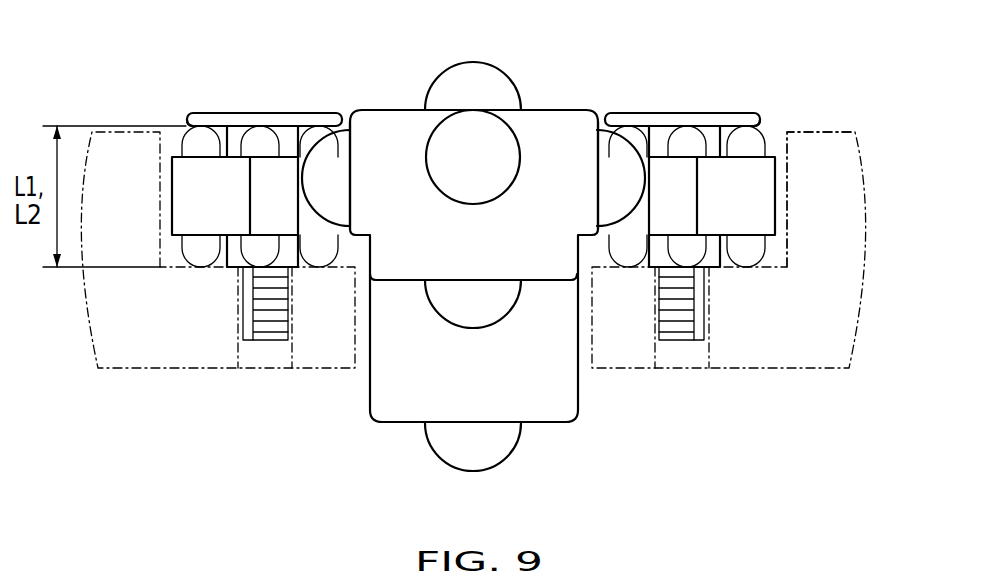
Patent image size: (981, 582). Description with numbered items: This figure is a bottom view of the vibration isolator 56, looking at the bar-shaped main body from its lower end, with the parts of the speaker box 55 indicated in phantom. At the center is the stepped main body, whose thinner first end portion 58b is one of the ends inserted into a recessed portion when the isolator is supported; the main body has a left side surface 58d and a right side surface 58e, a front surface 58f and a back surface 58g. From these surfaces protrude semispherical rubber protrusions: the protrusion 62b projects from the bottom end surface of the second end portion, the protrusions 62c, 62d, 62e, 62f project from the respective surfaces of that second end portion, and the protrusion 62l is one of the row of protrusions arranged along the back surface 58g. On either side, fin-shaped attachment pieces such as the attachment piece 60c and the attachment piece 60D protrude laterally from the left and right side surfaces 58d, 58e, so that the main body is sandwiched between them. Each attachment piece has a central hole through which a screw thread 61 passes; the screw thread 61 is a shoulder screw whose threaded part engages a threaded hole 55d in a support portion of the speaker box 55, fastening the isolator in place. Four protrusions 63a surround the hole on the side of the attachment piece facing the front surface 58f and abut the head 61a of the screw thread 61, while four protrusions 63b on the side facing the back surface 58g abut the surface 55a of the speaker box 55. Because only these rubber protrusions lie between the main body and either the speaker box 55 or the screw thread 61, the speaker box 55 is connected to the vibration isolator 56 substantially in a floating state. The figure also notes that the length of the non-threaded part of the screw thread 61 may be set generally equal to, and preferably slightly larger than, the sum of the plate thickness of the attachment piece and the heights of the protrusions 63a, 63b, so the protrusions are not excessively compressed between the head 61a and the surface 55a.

The speaker box 55 is at (798, 380).
The surface of the speaker box 55a is at (787, 252).
The threaded hole 55d is at (251, 362).
The vibration isolator 56 is at (111, 31).
The first end portion 58b is at (509, 105).
The left side surface 58d is at (341, 163).
The right side surface 58e is at (620, 130).
The front surface 58f is at (380, 110).
The back surface 58g is at (400, 282).
The attachment piece 60c is at (197, 168).
The attachment piece 60D is at (757, 185).
The screw thread 61 is at (188, 106).
The head 61a is at (192, 118).
The protrusion 62b is at (508, 148).
The protrusion 62c is at (313, 140).
The protrusion 62d is at (620, 150).
The protrusion 62e is at (472, 72).
The protrusion 62f is at (497, 308).
The protrusion 62l is at (483, 456).
The protrusions 63a is at (307, 137).
The protrusions 63b is at (318, 262).